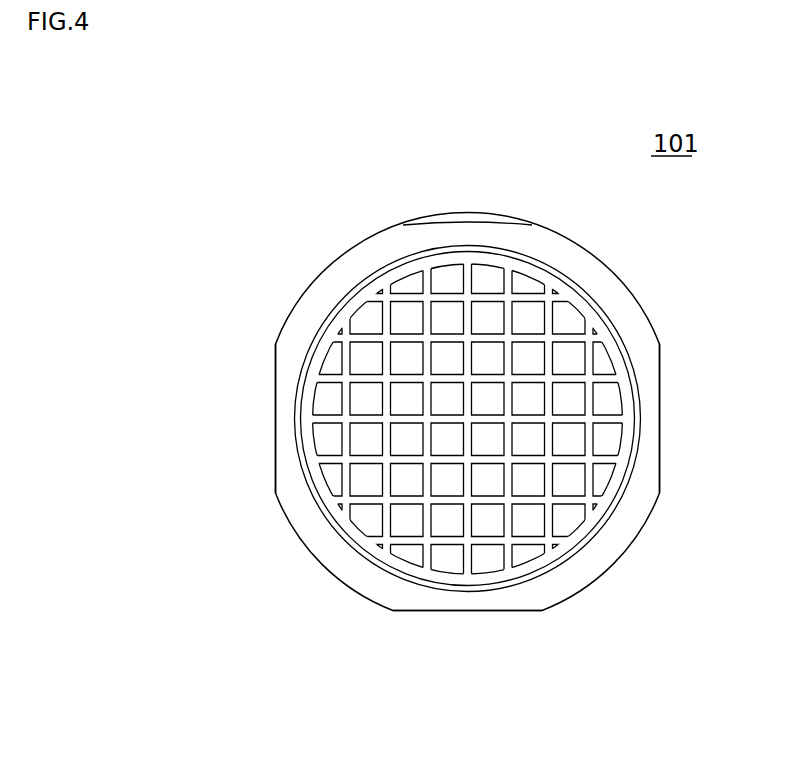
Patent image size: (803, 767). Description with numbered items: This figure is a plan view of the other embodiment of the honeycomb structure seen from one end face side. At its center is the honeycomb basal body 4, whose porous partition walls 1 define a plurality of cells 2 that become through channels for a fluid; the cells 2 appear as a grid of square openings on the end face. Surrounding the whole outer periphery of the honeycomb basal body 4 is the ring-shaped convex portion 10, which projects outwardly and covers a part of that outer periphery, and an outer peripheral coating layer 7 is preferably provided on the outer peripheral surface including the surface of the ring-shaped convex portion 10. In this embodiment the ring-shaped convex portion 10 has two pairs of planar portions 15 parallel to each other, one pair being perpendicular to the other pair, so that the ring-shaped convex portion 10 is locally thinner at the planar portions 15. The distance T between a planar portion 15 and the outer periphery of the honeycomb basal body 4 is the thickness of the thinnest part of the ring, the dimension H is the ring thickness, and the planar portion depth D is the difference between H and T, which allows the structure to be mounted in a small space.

The partition walls 1 is at (382, 497).
The cells 2 is at (578, 402).
The honeycomb basal body 4 is at (592, 297).
The outer peripheral coating layer 7 is at (620, 508).
The ring-shaped convex portion 10 is at (655, 330).
The planar portions 15 is at (660, 380).